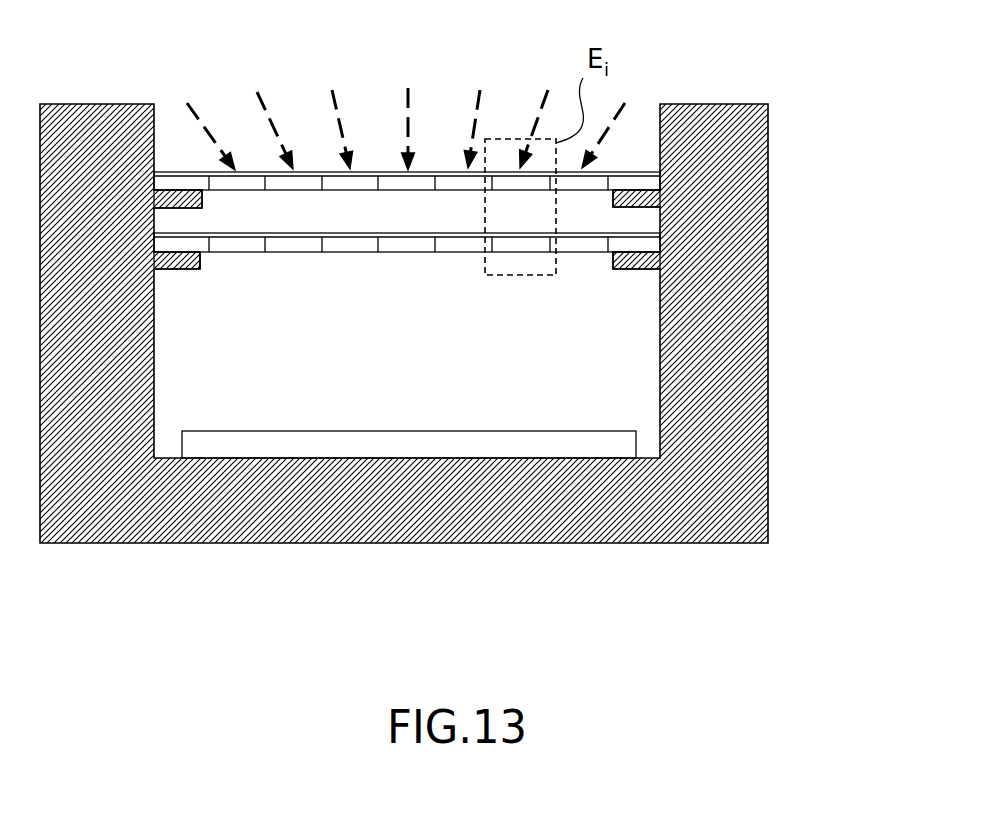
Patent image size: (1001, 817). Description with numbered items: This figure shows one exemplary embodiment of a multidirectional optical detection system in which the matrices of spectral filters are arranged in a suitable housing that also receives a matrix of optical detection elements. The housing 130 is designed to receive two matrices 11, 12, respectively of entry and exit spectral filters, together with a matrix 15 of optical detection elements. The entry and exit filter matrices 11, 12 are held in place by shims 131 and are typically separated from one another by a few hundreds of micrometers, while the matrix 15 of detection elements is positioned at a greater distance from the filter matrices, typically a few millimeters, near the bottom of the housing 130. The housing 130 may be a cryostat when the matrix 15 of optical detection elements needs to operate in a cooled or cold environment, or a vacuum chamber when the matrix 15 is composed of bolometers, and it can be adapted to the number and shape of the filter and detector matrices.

The housing 130 is at (765, 105).
The shims 131 is at (177, 208).
The matrix of entry spectral filters 11 is at (688, 182).
The matrix of exit spectral filters 12 is at (684, 244).
The matrix of optical detection elements 15 is at (661, 447).